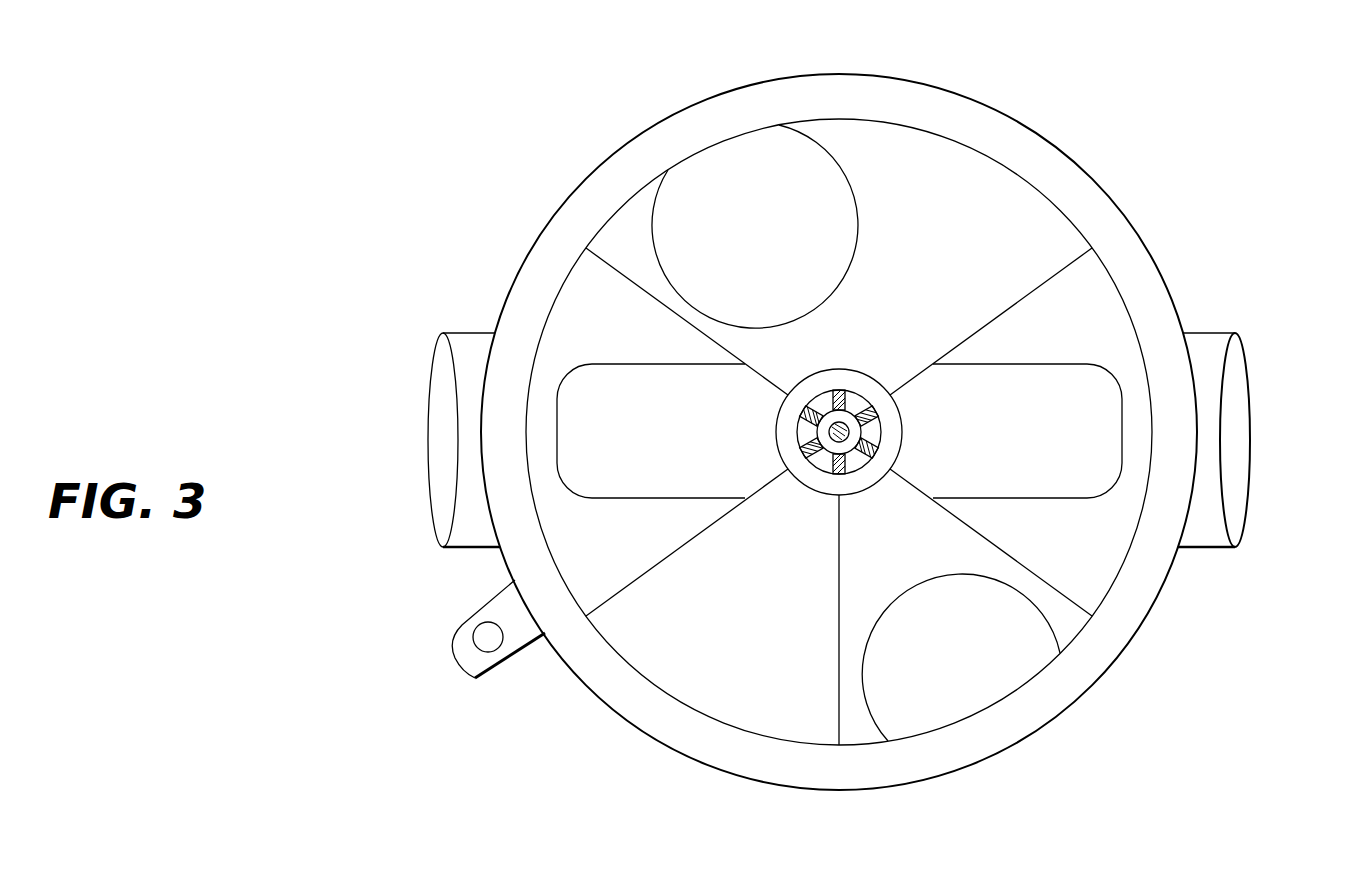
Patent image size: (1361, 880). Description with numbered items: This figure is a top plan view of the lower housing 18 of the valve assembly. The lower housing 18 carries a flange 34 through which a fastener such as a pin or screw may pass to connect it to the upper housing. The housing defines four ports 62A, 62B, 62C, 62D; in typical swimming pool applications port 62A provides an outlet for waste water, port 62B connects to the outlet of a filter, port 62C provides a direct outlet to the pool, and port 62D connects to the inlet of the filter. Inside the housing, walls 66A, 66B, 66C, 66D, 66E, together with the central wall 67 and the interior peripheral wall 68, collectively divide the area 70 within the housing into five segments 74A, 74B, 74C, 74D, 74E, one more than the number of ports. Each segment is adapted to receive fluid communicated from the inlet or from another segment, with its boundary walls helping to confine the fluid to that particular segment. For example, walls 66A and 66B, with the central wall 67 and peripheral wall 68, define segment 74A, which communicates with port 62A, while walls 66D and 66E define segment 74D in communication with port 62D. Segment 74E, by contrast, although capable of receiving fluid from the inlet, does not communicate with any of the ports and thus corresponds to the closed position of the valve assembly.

The lower housing 18 is at (843, 413).
The flange 34 is at (520, 652).
The port 62A is at (452, 443).
The port 62B is at (755, 226).
The port 62C is at (1228, 441).
The port 62D is at (961, 657).
The wall 66A is at (655, 567).
The wall 66B is at (762, 363).
The wall 66C is at (1002, 305).
The wall 66D is at (1012, 557).
The wall 66E is at (840, 593).
The central wall 67 is at (878, 367).
The interior peripheral wall 68 is at (1128, 290).
The area 70 is at (910, 176).
The segment 74A is at (651, 431).
The segment 74B is at (927, 255).
The segment 74C is at (1027, 431).
The segment 74D is at (883, 522).
The segment 74E is at (749, 597).